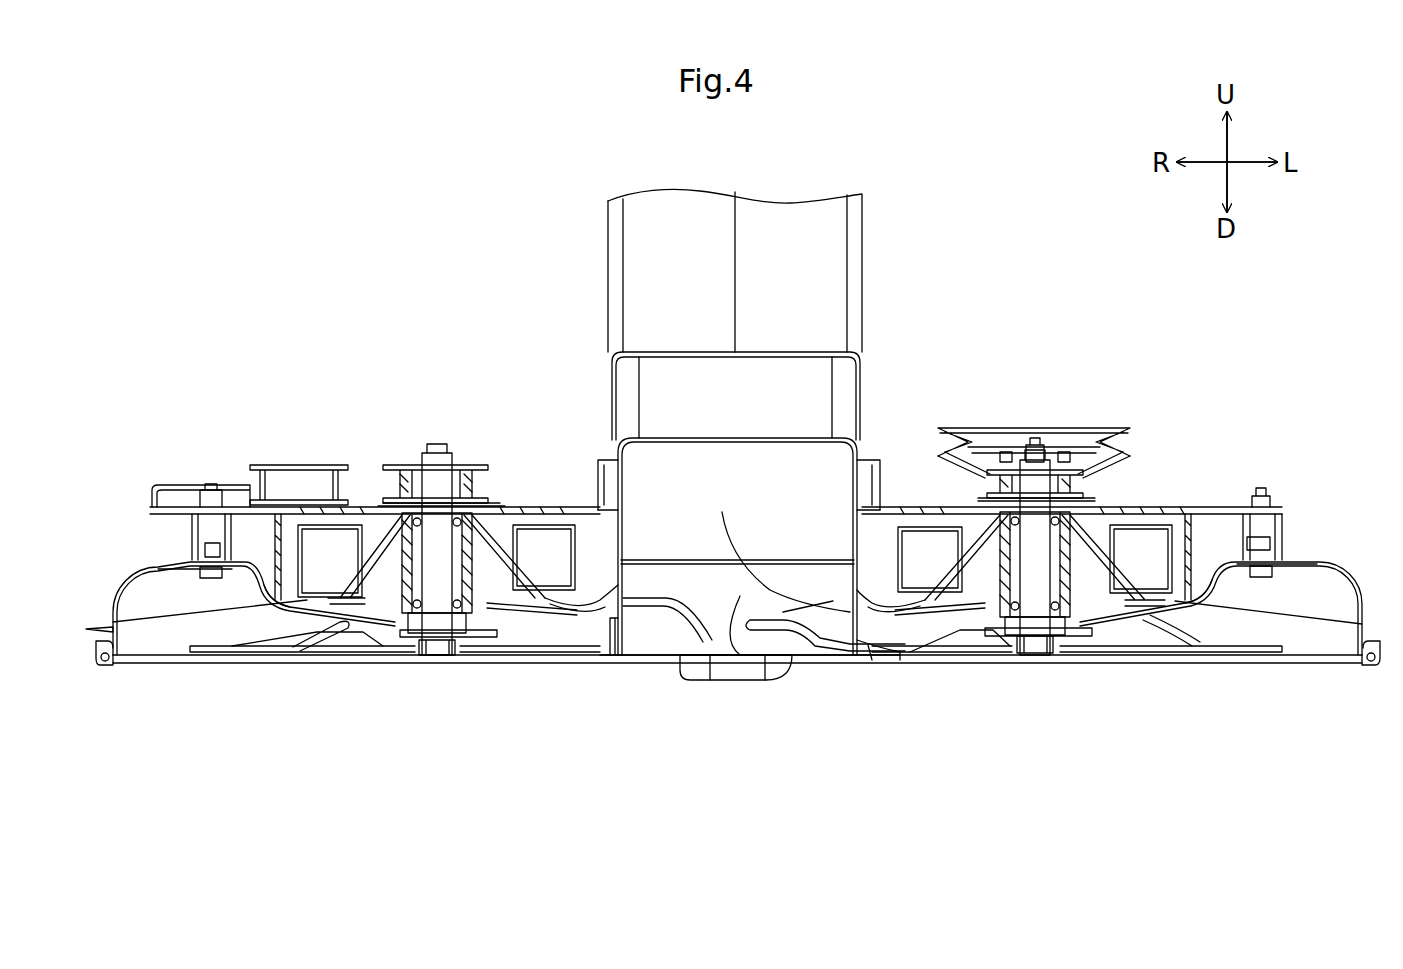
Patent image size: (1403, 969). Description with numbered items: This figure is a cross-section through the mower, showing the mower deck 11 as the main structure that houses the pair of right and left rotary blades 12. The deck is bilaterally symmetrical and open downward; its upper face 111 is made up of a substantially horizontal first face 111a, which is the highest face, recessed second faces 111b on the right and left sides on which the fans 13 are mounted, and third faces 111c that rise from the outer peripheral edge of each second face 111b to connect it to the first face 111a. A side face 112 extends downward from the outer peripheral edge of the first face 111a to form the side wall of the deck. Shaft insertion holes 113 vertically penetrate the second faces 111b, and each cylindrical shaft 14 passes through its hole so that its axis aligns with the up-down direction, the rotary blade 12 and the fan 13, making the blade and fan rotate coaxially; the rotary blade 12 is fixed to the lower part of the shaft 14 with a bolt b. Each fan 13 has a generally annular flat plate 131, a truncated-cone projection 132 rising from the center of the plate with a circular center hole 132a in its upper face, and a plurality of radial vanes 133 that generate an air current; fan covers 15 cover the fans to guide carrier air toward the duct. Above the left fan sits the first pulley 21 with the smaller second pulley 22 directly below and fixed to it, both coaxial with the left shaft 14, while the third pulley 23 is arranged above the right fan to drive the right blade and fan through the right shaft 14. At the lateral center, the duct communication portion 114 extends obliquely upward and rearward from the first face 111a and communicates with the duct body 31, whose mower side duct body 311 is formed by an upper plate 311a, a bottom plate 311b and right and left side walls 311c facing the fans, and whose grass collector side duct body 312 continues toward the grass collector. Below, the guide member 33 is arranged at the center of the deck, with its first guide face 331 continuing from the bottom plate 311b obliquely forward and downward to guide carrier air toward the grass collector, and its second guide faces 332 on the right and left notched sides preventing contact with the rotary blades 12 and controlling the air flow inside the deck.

The mower deck 11 is at (128, 680).
The rotary blade 12 is at (472, 660).
The fan 13 is at (488, 466).
The shaft 14 is at (437, 535).
The fan cover 15 is at (560, 478).
The first pulley 21 is at (1118, 427).
The second pulley 22 is at (968, 486).
The third pulley 23 is at (390, 466).
The duct body 31 is at (600, 266).
The guide member 33 is at (690, 630).
The upper face 111 is at (165, 558).
The first face 111a is at (190, 562).
The second face 111b is at (320, 602).
The third face 111c is at (237, 507).
The side face 112 is at (142, 652).
The shaft insertion hole 113 is at (398, 660).
The duct communication portion 114 is at (658, 628).
The flat plate 131 is at (542, 640).
The projection 132 is at (518, 524).
The center hole 132a is at (446, 464).
The vane 133 is at (318, 540).
The mower side duct body 311 is at (770, 346).
The upper plate 311a is at (765, 455).
The bottom plate 311b is at (905, 656).
The side wall 311c is at (598, 470).
The grass collector side duct body 312 is at (805, 252).
The first guide face 331 is at (730, 688).
The second guide face 332 is at (638, 545).
The bolt b is at (430, 662).